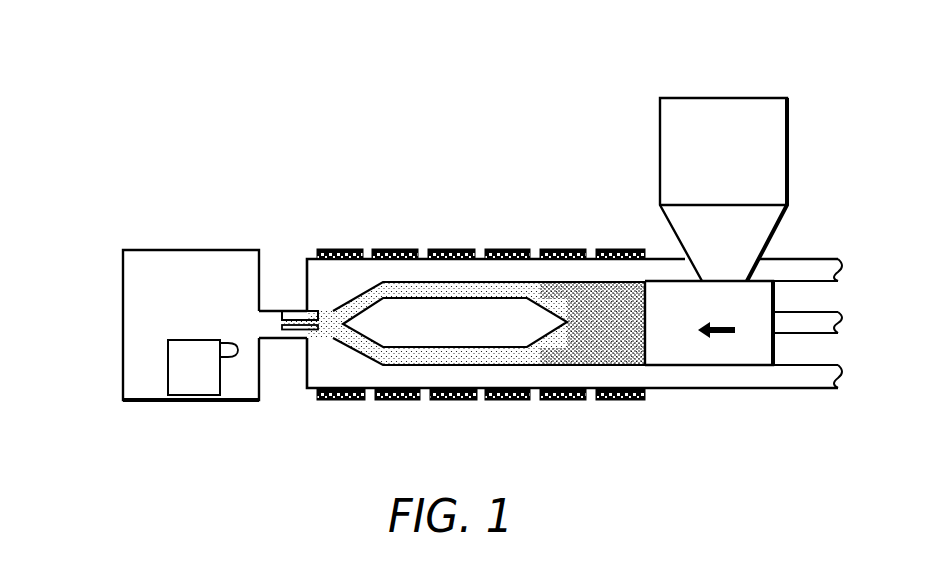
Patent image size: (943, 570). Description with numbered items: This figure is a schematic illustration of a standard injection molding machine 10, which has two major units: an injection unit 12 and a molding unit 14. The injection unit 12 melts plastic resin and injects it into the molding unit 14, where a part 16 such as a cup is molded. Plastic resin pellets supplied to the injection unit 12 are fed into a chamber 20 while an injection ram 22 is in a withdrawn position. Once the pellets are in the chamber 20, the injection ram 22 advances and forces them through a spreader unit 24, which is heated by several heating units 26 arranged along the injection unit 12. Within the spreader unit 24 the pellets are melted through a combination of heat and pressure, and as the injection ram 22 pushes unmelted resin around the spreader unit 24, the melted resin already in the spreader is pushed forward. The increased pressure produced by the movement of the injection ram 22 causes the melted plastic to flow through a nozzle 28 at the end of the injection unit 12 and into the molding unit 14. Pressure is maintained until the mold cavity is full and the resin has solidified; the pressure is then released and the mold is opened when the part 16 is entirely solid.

The injection molding machine 10 is at (785, 458).
The injection unit 12 is at (712, 390).
The molding unit 14 is at (240, 402).
The part 16 is at (167, 373).
The chamber 20 is at (447, 370).
The injection ram 22 is at (693, 347).
The spreader unit 24 is at (453, 328).
The heating units 26 is at (507, 248).
The nozzle 28 is at (292, 306).